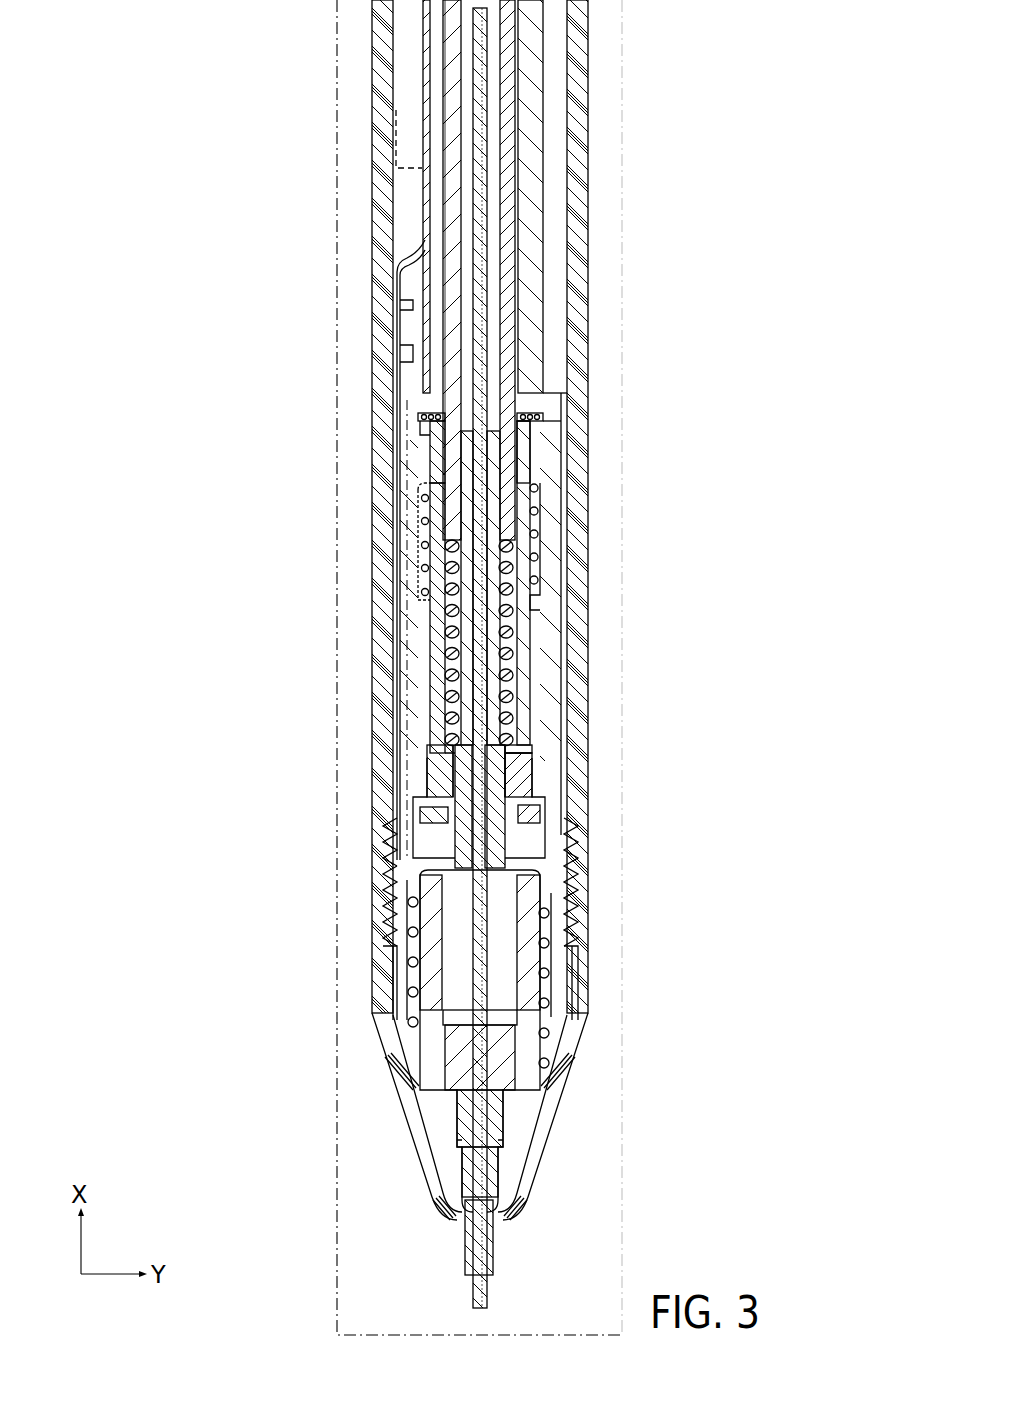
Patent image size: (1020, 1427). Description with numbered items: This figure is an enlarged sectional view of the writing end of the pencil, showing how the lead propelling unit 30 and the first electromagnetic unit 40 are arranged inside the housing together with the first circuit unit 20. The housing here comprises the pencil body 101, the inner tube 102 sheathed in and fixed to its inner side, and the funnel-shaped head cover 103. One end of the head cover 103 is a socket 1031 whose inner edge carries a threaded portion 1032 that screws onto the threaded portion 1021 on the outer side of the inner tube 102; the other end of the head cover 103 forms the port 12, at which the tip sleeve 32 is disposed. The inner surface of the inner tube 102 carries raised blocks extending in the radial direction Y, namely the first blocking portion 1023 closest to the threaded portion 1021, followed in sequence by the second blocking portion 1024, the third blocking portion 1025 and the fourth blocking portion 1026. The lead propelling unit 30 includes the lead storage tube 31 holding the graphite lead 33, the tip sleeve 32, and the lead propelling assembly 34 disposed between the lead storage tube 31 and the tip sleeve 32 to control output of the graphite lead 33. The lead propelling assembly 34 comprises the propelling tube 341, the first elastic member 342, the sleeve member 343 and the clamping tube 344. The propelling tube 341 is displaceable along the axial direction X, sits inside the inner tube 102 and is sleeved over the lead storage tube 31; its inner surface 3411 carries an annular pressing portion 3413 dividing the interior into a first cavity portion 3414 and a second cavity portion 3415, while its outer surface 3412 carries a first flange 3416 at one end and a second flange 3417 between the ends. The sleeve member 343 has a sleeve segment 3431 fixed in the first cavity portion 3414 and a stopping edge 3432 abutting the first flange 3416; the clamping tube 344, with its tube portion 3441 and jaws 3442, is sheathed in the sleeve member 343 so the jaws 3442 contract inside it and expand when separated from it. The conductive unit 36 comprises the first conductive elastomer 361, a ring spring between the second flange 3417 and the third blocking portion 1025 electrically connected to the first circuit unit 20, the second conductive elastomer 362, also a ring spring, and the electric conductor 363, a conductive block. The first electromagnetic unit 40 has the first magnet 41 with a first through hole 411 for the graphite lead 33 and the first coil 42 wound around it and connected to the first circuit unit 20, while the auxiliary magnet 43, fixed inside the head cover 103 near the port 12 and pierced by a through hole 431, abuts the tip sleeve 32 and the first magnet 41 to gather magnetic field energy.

The first circuit unit 20 is at (410, 105).
The pencil body 101 is at (400, 306).
The inner tube 102 is at (437, 323).
The fourth blocking portion 1026 is at (427, 405).
The third blocking portion 1025 is at (428, 452).
The lead storage tube 31 is at (440, 488).
The second flange 3417 is at (427, 603).
The lead propelling unit 30 is at (415, 633).
The second cavity portion 3415 is at (440, 725).
The first cavity portion 3414 is at (457, 742).
The second blocking portion 1024 is at (436, 764).
The first flange 3416 is at (420, 797).
The socket 1031 is at (395, 828).
The threaded portion 1021 is at (378, 852).
The threaded portion 1032 is at (571, 882).
The head cover 103 is at (378, 878).
The tip sleeve 32 is at (458, 1122).
The graphite lead 33 is at (455, 1216).
The port 12 is at (493, 1225).
The second conductive elastomer 362 is at (545, 416).
The electric conductor 363 is at (538, 428).
The first conductive elastomer 361 is at (543, 483).
The conductive unit 36 is at (688, 400).
The inner surface 3411 is at (512, 688).
The outer surface 3412 is at (530, 710).
The annular pressing portion 3413 is at (530, 737).
The first elastic member 342 is at (507, 760).
The propelling tube 341 is at (523, 777).
The sleeve segment 3431 is at (517, 793).
The stopping edge 3432 is at (527, 827).
The sleeve member 343 is at (695, 790).
The lead propelling assembly 34 is at (757, 890).
The tube portion 3441 is at (497, 848).
The jaws 3442 is at (530, 868).
The clamping tube 344 is at (695, 840).
The first blocking portion 1023 is at (542, 878).
The first through hole 411 is at (527, 1043).
The first coil 42 is at (550, 1063).
The first magnet 41 is at (533, 1085).
The auxiliary magnet 43 is at (527, 1103).
The through hole 431 is at (530, 1128).
The first electromagnetic unit 40 is at (692, 1023).